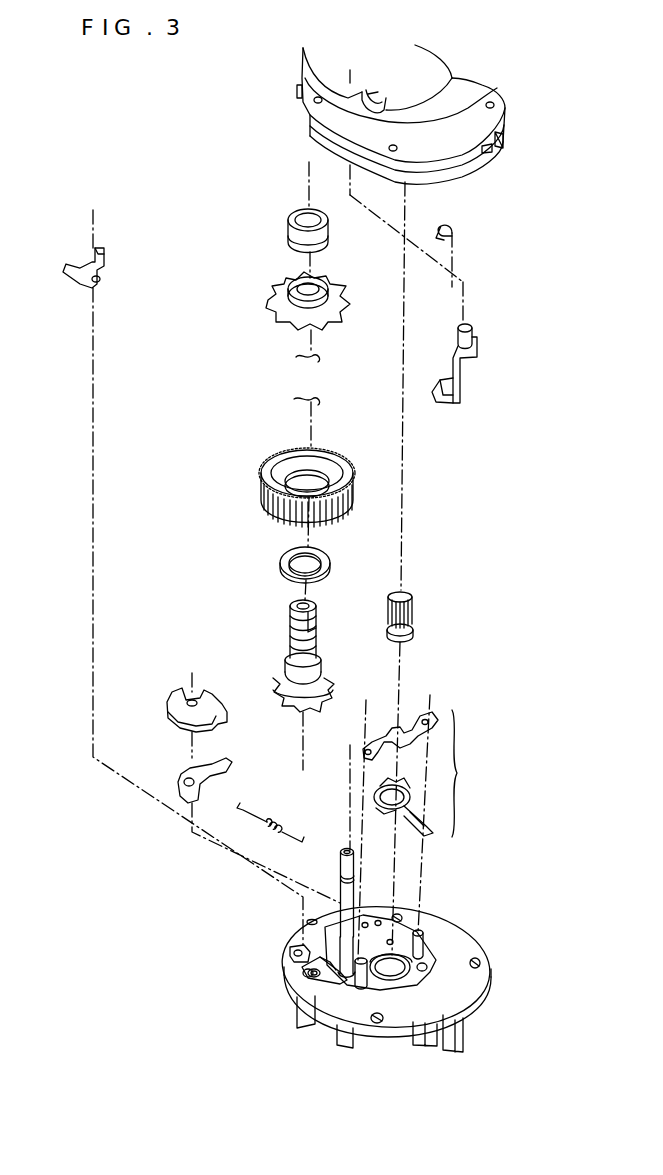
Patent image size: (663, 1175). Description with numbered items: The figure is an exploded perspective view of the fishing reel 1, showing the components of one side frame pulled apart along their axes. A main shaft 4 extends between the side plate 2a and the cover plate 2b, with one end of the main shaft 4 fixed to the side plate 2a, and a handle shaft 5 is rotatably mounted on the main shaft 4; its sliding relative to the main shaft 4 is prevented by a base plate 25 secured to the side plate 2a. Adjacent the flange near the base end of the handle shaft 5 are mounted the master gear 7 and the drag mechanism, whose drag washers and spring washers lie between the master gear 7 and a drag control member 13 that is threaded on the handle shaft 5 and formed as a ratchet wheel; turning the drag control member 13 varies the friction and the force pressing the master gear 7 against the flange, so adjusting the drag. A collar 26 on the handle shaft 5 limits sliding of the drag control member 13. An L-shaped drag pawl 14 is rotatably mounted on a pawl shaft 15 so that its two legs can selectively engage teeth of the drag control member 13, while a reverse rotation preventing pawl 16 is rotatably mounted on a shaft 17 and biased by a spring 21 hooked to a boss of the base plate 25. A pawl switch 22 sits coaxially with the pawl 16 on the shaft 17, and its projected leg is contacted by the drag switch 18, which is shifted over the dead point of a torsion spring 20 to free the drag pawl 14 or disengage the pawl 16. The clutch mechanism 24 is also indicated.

The fishing reel 1 is at (430, 934).
The side plate 2a is at (400, 973).
The cover plate 2b is at (458, 96).
The main shaft 4 is at (341, 868).
The handle shaft 5 is at (288, 646).
The master gear 7 is at (262, 482).
The drag control member 13 is at (268, 308).
The drag pawl 14 is at (105, 262).
The pawl shaft 15 is at (328, 970).
The reverse rotation preventing pawl 16 is at (224, 764).
The shaft 17 is at (306, 963).
The drag switch 18 is at (462, 376).
The torsion spring 20 is at (444, 232).
The spring 21 is at (278, 820).
The pawl switch 22 is at (176, 696).
The clutch mechanism 24 is at (434, 773).
The base plate 25 is at (320, 946).
The collar 26 is at (287, 231).